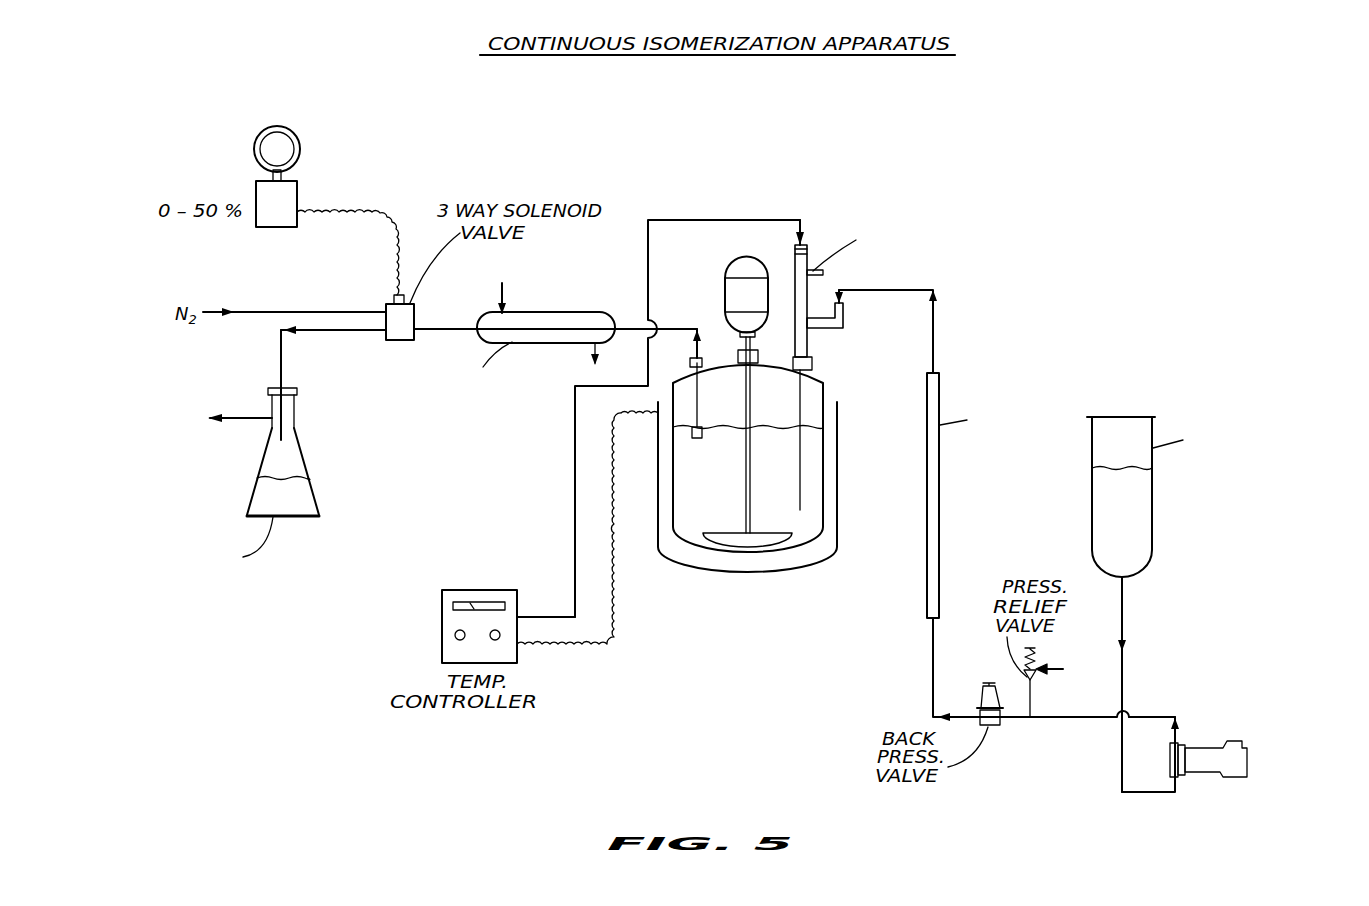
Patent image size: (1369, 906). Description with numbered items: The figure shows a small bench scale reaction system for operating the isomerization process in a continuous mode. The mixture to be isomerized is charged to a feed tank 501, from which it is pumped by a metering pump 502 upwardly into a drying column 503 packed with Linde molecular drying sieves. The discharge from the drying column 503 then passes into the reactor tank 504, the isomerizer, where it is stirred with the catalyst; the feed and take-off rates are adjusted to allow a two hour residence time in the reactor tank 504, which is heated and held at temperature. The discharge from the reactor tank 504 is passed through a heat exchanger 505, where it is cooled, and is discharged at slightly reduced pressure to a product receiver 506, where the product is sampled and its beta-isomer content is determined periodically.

The feed tank 501 is at (1153, 487).
The metering pump 502 is at (1198, 745).
The drying column 503 is at (940, 477).
The reactor tank 504 is at (822, 380).
The heat exchanger 505 is at (558, 313).
The product receiver 506 is at (307, 478).